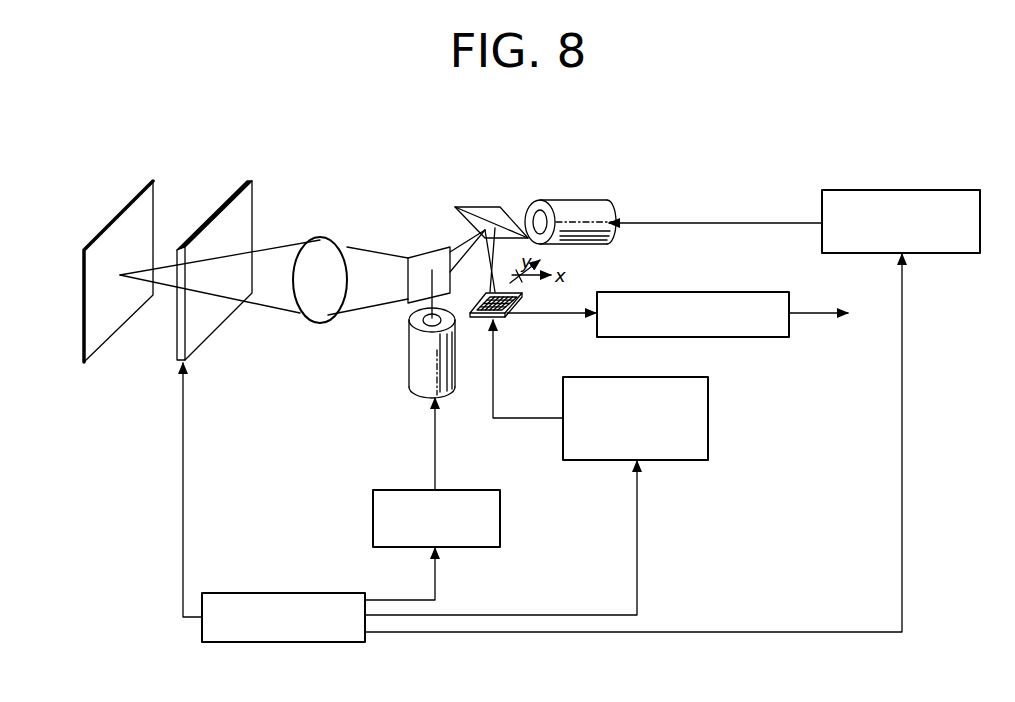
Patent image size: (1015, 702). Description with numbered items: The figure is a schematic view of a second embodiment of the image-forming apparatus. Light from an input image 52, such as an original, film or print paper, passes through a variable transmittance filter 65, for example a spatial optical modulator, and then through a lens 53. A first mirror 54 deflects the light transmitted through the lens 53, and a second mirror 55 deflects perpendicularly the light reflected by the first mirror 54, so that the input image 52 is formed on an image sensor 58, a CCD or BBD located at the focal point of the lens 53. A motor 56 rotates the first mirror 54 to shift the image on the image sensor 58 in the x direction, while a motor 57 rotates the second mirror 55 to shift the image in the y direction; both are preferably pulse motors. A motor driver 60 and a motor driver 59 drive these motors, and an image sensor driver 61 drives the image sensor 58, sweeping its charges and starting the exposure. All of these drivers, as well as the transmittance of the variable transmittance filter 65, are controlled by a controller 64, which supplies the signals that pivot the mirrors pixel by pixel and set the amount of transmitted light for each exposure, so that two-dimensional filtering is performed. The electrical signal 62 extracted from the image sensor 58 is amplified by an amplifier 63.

The input image 52 is at (143, 203).
The variable transmittance filter 65 is at (242, 208).
The lens 53 is at (328, 258).
The first mirror 54 is at (427, 260).
The second mirror 55 is at (482, 212).
The motor 56 is at (417, 363).
The motor 57 is at (570, 207).
The image sensor 58 is at (503, 320).
The electrical signal 62 is at (553, 317).
The amplifier 63 is at (695, 290).
The motor driver 60 is at (893, 188).
The image sensor driver 61 is at (708, 412).
The motor driver 59 is at (500, 510).
The controller 64 is at (287, 642).